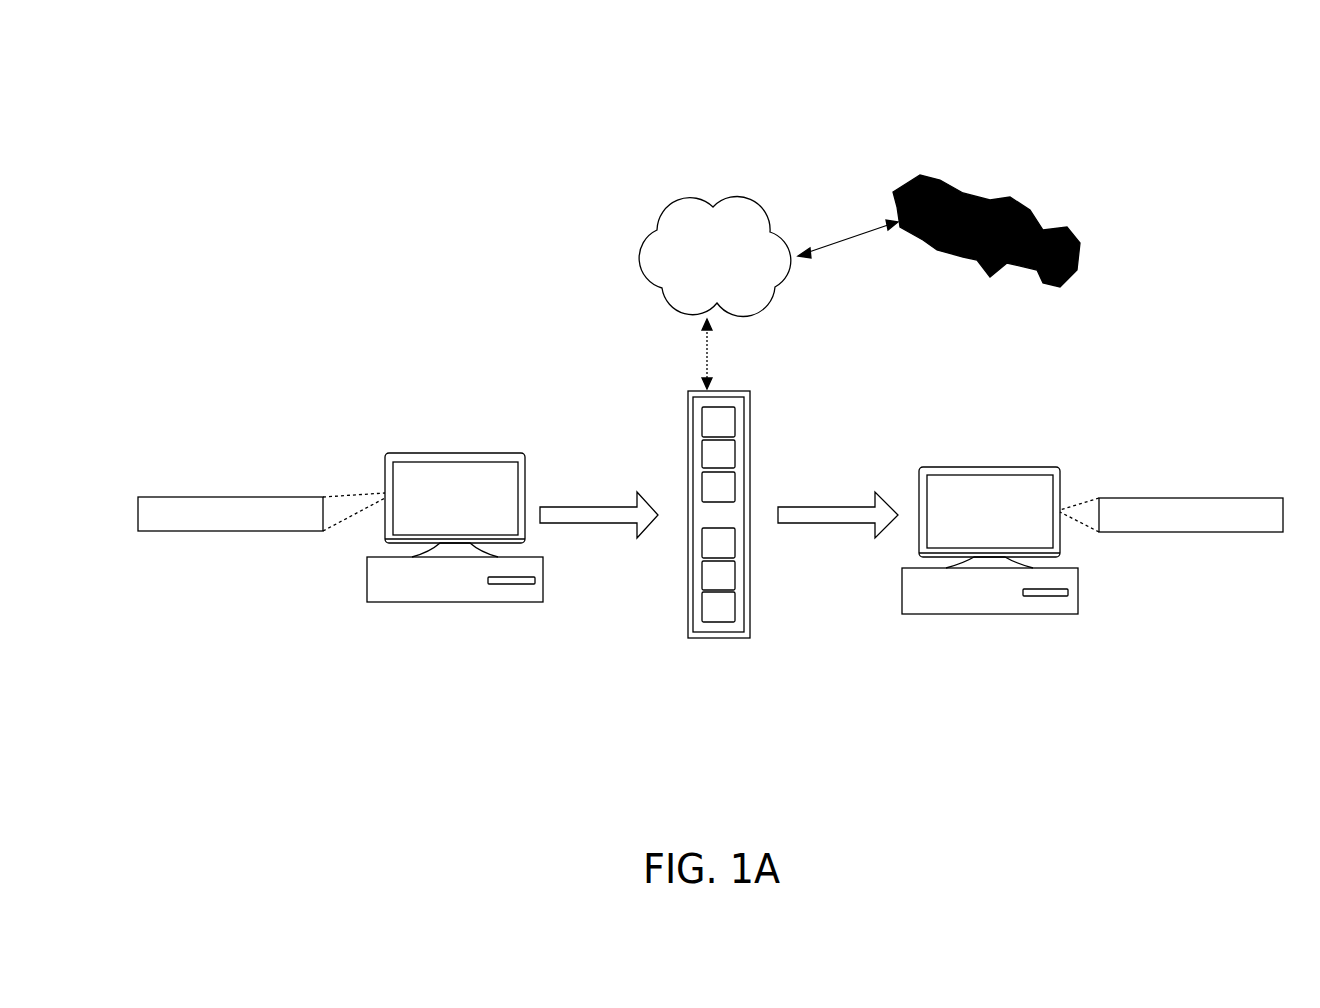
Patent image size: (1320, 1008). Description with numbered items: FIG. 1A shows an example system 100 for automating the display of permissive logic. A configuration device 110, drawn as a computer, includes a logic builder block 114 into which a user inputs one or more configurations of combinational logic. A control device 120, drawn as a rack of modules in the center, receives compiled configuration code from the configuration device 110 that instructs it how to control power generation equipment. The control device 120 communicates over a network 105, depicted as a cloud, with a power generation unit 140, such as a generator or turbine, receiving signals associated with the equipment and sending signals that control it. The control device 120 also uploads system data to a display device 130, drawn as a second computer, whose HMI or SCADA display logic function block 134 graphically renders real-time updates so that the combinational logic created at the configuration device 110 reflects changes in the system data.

The system 100 is at (1191, 53).
The network 105 is at (730, 279).
The configuration device 110 is at (444, 550).
The logic builder block 114 is at (455, 498).
The control device 120 is at (718, 639).
The display device 130 is at (977, 560).
The logic function block 134 is at (990, 511).
The power generation unit 140 is at (1012, 203).